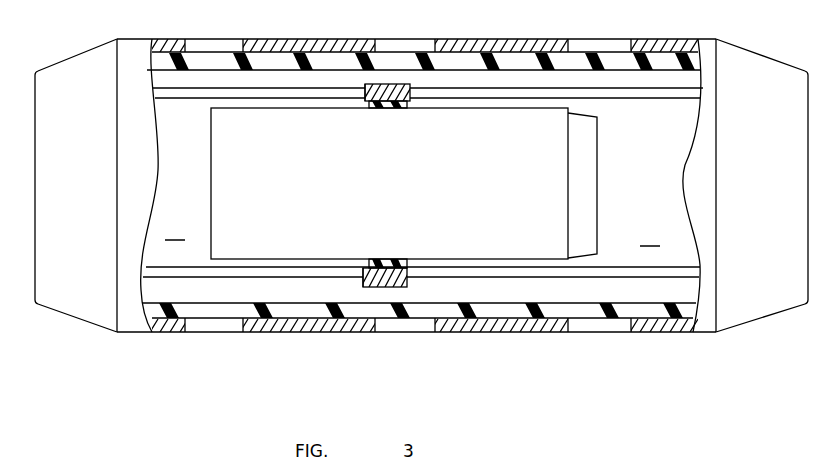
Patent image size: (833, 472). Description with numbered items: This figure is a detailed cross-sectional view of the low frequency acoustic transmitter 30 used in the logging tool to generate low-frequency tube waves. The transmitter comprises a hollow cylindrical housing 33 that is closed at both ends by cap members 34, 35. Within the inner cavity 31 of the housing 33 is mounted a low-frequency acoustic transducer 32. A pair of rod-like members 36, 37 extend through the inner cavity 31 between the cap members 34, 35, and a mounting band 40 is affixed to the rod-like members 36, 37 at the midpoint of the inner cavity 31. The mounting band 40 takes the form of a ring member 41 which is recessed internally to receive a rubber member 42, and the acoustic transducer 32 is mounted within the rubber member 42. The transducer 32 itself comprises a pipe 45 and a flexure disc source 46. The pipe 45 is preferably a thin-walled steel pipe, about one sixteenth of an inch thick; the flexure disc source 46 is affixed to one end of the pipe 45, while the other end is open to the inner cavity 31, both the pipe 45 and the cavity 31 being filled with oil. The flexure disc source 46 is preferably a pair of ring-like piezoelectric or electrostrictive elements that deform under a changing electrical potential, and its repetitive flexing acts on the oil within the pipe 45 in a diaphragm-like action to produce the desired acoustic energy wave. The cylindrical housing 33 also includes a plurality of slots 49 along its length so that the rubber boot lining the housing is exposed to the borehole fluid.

The low frequency acoustic transmitter 30 is at (506, 27).
The inner cavity 31 is at (413, 234).
The low-frequency acoustic transducer 32 is at (603, 196).
The hollow cylindrical housing 33 is at (300, 52).
The cap member 34 is at (78, 68).
The cap member 35 is at (753, 67).
The rod-like member 36 is at (293, 93).
The rod-like member 37 is at (238, 273).
The mounting band 40 is at (408, 86).
The ring member 41 is at (375, 85).
The rubber member 42 is at (383, 110).
The pipe 45 is at (226, 137).
The flexure disc source 46 is at (588, 148).
The slots 49 is at (203, 326).